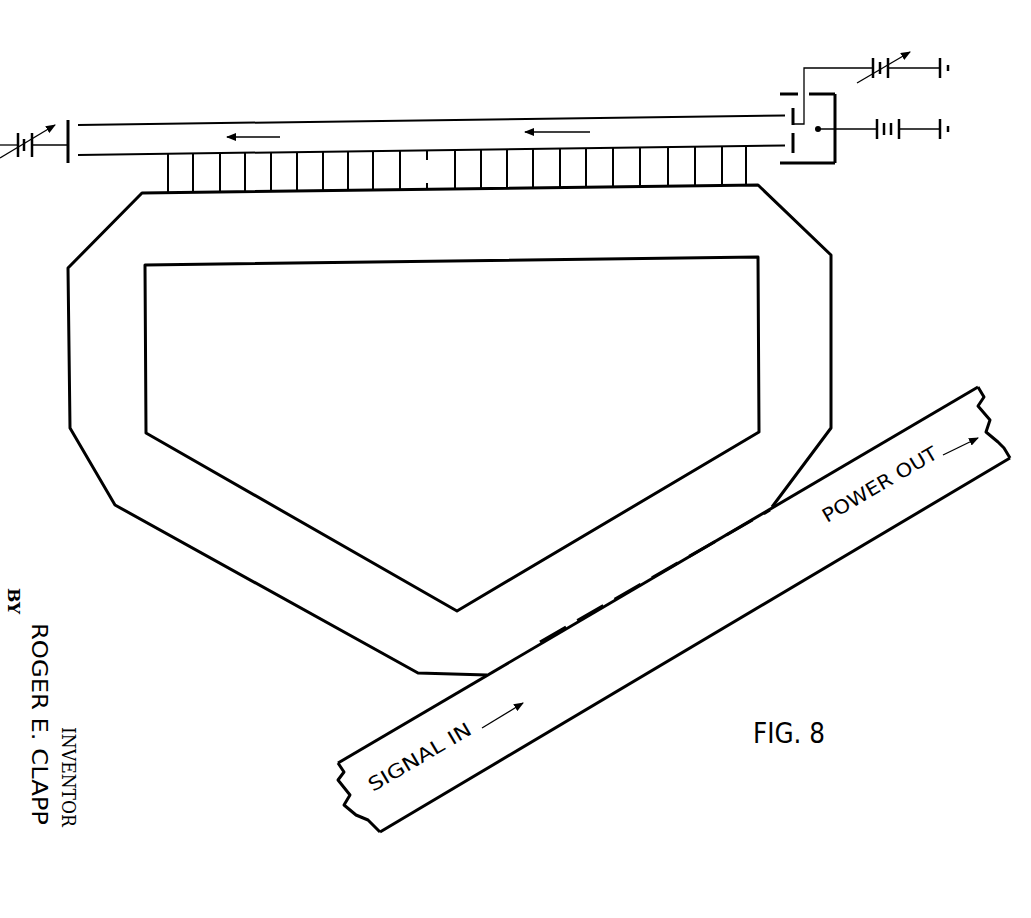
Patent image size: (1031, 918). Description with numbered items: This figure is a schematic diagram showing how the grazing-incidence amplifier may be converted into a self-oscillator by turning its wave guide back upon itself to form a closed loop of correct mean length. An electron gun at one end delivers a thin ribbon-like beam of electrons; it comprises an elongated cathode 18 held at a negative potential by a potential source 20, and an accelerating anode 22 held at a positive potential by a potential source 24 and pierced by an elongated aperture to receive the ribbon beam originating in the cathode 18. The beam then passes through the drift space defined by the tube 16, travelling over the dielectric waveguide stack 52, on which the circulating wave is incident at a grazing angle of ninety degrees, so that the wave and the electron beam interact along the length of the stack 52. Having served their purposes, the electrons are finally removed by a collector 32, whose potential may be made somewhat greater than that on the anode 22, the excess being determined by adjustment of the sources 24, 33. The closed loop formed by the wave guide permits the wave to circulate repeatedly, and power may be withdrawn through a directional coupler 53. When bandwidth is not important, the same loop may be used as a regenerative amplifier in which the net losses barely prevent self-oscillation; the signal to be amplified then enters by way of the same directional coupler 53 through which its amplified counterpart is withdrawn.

The tube 16 is at (625, 118).
The cathode 18 is at (820, 134).
The potential source 20 is at (893, 140).
The accelerating anode 22 is at (785, 119).
The potential source 24 is at (875, 60).
The collector 32 is at (63, 158).
The potential source 33 is at (27, 125).
The stack 52 is at (446, 181).
The directional coupler 53 is at (570, 630).